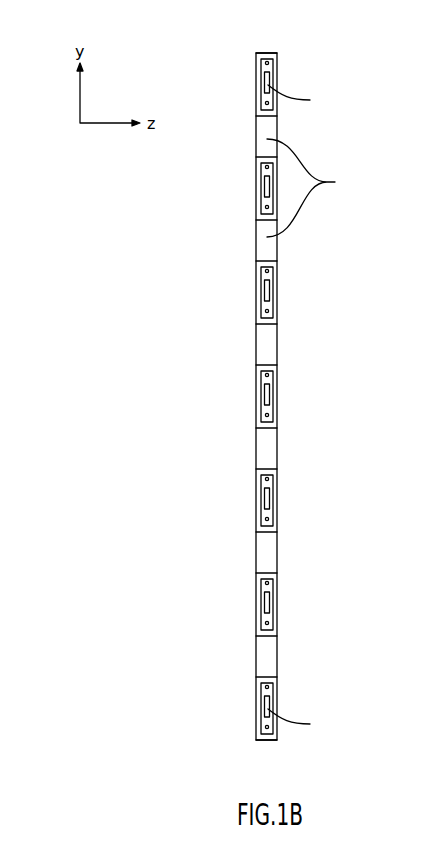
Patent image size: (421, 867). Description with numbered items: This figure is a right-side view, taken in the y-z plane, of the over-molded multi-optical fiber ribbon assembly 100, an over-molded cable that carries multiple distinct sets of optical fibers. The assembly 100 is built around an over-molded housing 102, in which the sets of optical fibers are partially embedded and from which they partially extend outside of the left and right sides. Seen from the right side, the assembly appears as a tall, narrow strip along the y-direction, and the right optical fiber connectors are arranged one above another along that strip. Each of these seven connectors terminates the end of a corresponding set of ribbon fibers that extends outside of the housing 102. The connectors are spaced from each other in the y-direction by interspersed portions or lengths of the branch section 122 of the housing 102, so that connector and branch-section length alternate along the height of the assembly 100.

The over-molded multi-optical fiber ribbon assembly 100 is at (348, 60).
The over-molded housing 102 is at (257, 46).
The branch section 122 is at (314, 188).